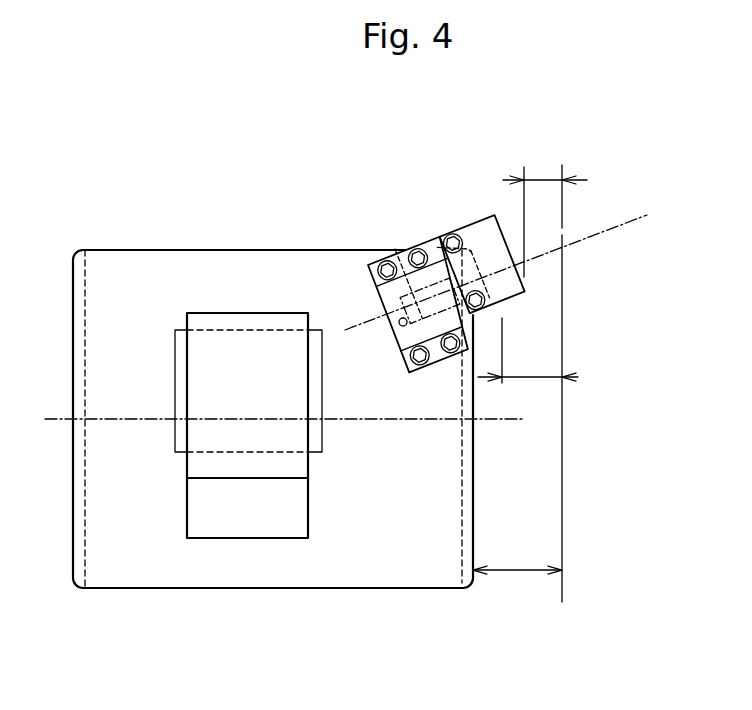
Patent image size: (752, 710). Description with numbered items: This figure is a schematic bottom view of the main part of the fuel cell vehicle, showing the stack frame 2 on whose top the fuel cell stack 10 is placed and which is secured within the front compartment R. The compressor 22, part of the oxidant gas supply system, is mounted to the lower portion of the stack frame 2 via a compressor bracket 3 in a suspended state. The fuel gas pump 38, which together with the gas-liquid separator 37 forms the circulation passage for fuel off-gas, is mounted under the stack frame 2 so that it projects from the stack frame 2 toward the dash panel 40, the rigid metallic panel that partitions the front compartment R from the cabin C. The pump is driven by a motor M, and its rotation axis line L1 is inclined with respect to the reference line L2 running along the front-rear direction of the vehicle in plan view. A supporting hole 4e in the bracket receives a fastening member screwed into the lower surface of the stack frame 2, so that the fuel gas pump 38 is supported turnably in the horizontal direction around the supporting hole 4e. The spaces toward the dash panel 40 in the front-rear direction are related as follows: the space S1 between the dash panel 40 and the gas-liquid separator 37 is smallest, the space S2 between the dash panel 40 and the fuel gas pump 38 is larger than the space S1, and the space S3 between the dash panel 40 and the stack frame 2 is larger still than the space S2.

The stack frame 2 is at (195, 275).
The fuel cell stack 10 is at (87, 297).
The compressor bracket 3 is at (178, 430).
The compressor 22 is at (265, 523).
The gas-liquid separator 37 is at (475, 224).
The fuel gas pump 38 is at (507, 308).
The motor M is at (398, 248).
The supporting hole 4e is at (399, 320).
The dash panel 40 is at (567, 481).
The rotation axis line L1 is at (617, 227).
The reference line L2 is at (368, 420).
The space S1 is at (540, 180).
The space S2 is at (528, 350).
The space S3 is at (517, 557).
The front compartment R is at (508, 647).
The cabin C is at (660, 647).